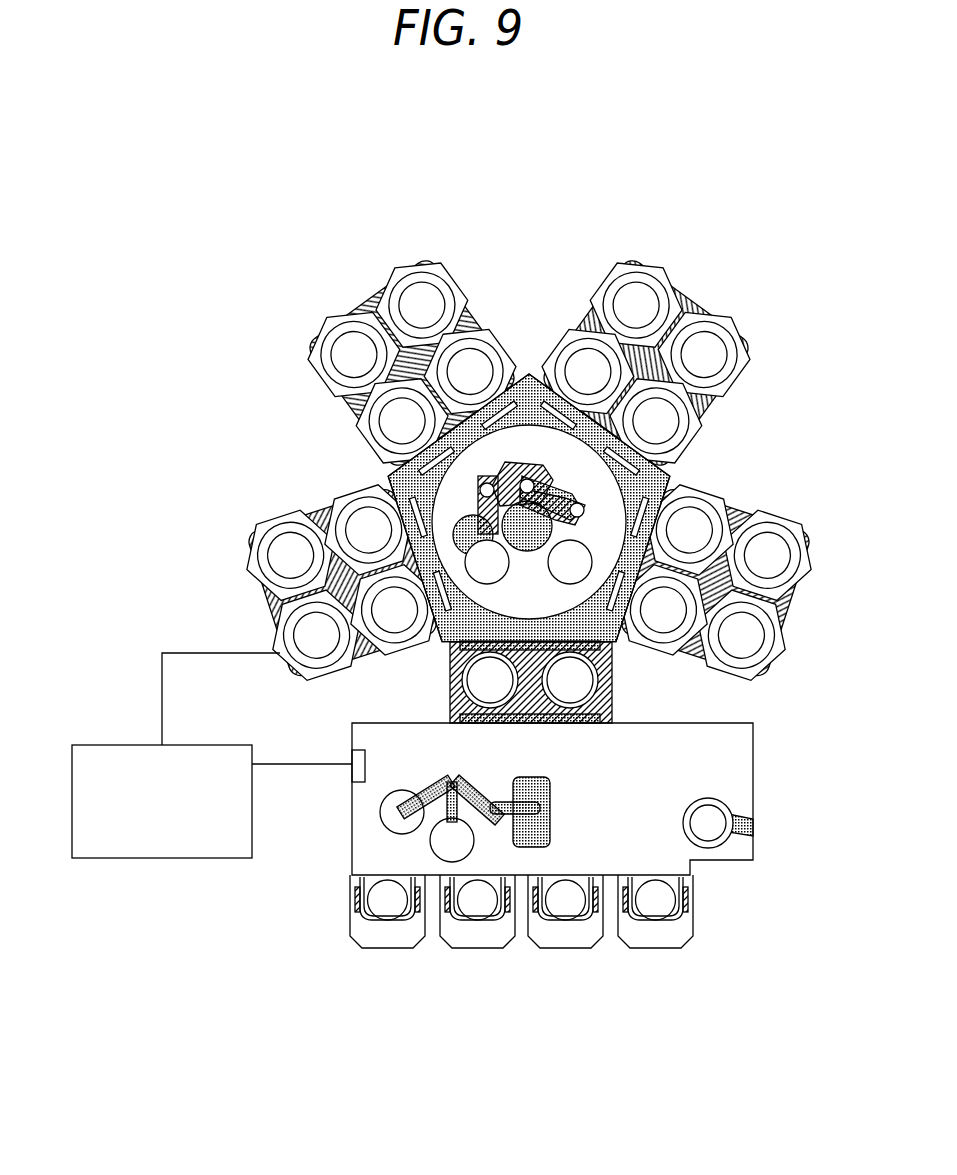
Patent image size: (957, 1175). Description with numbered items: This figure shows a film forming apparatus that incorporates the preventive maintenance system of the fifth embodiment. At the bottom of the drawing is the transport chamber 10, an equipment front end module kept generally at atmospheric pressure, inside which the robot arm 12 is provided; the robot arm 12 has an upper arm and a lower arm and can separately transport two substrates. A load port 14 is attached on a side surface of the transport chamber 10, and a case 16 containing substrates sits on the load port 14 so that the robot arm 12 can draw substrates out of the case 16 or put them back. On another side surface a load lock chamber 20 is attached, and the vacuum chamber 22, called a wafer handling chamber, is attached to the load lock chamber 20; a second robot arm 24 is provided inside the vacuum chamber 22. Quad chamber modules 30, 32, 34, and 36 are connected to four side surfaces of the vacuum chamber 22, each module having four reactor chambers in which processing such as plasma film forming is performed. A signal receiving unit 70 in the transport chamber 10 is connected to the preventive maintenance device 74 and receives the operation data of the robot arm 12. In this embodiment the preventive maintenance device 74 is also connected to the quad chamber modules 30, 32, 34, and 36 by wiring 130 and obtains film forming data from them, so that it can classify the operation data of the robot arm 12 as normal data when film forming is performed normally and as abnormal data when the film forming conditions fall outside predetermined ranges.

The transport chamber 10 is at (730, 862).
The robot arm 12 is at (527, 876).
The load port 14 is at (386, 948).
The case 16 is at (355, 928).
The load lock chamber 20 is at (612, 655).
The vacuum chamber 22 is at (670, 480).
The robot arm 24 is at (518, 462).
The quad chamber module 30 is at (317, 502).
The quad chamber module 32 is at (348, 418).
The quad chamber module 34 is at (703, 413).
The quad chamber module 36 is at (790, 521).
The signal receiving unit 70 is at (352, 775).
The preventive maintenance device 74 is at (165, 858).
The wiring 130 is at (172, 650).